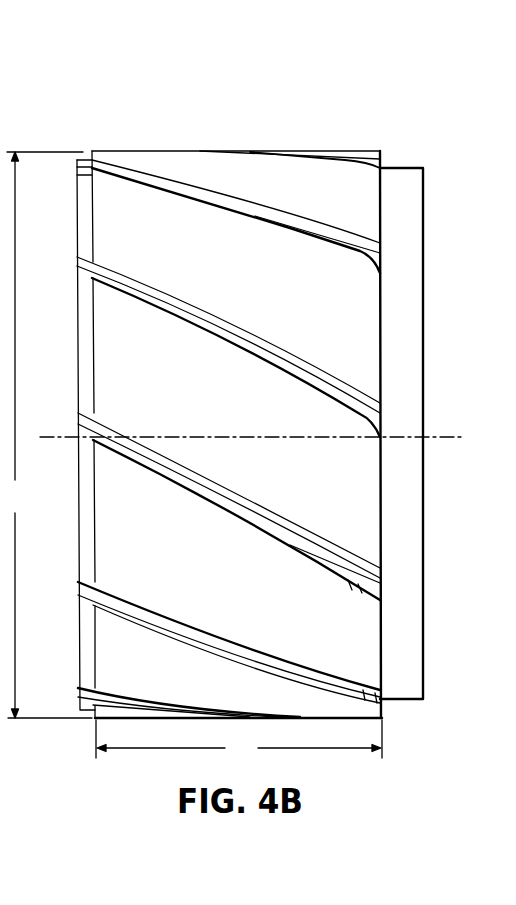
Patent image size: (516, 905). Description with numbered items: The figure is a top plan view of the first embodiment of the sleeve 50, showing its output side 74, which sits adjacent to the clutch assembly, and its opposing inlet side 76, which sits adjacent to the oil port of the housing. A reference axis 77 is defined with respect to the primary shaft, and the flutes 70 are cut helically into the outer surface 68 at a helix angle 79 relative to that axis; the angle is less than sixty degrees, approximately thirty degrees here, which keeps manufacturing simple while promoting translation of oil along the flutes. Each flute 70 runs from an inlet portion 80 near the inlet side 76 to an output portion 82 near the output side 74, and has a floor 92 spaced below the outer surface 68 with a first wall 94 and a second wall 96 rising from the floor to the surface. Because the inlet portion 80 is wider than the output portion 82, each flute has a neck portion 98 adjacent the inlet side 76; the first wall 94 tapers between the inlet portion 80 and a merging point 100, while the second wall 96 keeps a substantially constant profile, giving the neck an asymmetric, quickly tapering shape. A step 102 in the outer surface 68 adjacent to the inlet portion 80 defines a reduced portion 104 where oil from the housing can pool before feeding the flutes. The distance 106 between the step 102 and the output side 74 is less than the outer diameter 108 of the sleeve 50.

The sleeve 50 is at (262, 122).
The outer surface 68 is at (347, 177).
The flutes 70 is at (190, 175).
The output side 74 is at (72, 288).
The inlet side 76 is at (433, 226).
The reference axis 77 is at (453, 429).
The helix angle 79 is at (350, 501).
The inlet portion 80 is at (392, 267).
The output portion 82 is at (70, 170).
The floor 92 is at (233, 512).
The first wall 94 is at (347, 580).
The second wall 96 is at (108, 428).
The neck portion 98 is at (392, 587).
The merging point 100 is at (362, 421).
The step 102 is at (391, 158).
The reduced portion 104 is at (425, 167).
The distance 106 is at (239, 739).
The outer diameter 108 is at (47, 435).